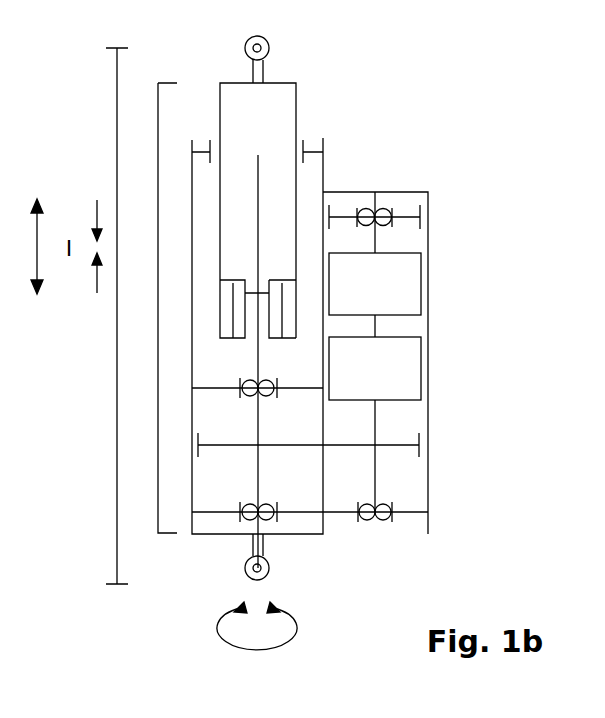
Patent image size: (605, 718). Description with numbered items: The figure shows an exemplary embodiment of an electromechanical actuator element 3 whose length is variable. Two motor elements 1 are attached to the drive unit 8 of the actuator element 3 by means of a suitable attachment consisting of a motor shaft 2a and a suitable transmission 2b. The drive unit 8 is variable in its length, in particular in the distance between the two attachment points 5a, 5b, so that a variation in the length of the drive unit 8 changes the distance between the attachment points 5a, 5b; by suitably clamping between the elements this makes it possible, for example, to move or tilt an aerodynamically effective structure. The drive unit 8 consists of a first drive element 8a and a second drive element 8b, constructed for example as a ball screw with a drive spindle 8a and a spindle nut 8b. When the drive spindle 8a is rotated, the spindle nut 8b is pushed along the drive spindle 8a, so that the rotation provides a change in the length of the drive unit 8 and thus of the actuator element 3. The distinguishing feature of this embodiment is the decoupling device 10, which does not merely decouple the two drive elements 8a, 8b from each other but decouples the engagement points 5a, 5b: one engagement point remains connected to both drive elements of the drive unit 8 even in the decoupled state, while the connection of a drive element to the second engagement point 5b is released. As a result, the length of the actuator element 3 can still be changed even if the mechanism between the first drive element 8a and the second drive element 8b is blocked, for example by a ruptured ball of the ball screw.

The motor element 1 is at (395, 285).
The motor shaft 2a is at (377, 476).
The transmission 2b is at (352, 447).
The actuator element 3 is at (394, 99).
The attachment point 5a is at (268, 573).
The attachment point 5b is at (268, 46).
The drive unit 8 is at (158, 473).
The drive spindle 8a is at (250, 470).
The spindle nut 8b is at (278, 340).
The decoupling device 10 is at (289, 287).